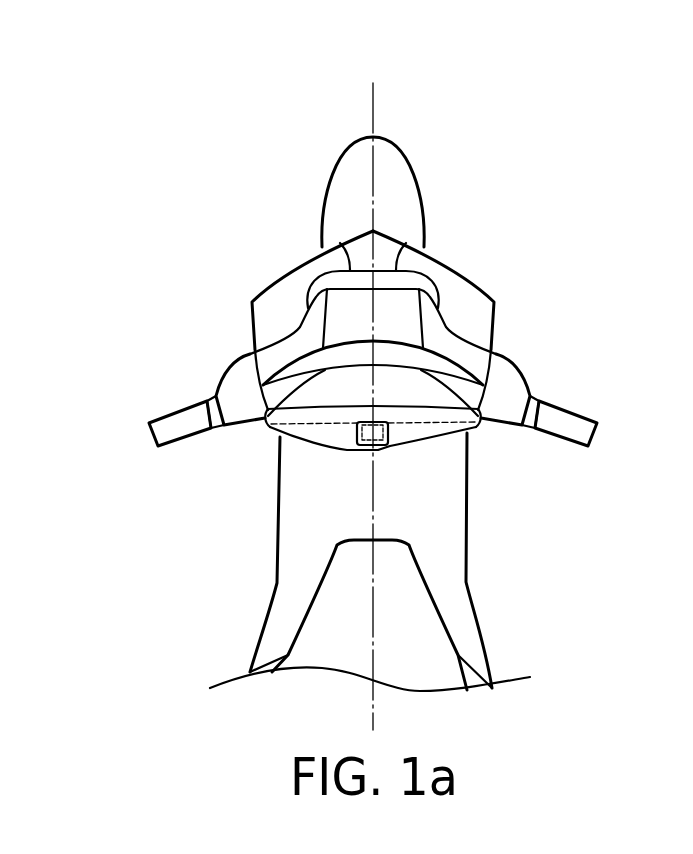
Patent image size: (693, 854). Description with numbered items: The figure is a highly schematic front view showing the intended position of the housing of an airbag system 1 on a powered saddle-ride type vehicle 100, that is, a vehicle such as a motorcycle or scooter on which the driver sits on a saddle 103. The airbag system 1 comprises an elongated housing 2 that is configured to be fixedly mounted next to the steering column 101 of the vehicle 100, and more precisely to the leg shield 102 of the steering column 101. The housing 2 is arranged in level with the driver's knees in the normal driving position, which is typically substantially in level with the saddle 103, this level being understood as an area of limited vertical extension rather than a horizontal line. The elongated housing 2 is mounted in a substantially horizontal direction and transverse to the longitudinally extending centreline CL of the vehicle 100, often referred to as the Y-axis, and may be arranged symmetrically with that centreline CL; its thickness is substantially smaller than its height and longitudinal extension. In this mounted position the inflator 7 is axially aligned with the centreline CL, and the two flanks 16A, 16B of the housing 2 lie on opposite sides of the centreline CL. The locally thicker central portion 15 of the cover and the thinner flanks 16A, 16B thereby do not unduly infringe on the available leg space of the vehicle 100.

The airbag system 1 is at (569, 296).
The powered saddle-ride type vehicle 100 is at (457, 203).
The steering column 101 is at (392, 315).
The leg shield 102 is at (434, 416).
The saddle 103 is at (410, 627).
The elongated housing 2 is at (470, 432).
The inflator 7 is at (388, 437).
The locally thicker central portion 15 is at (377, 452).
The flank 16A is at (307, 435).
The flank 16B is at (423, 437).
The longitudinally extending centreline CL is at (373, 107).